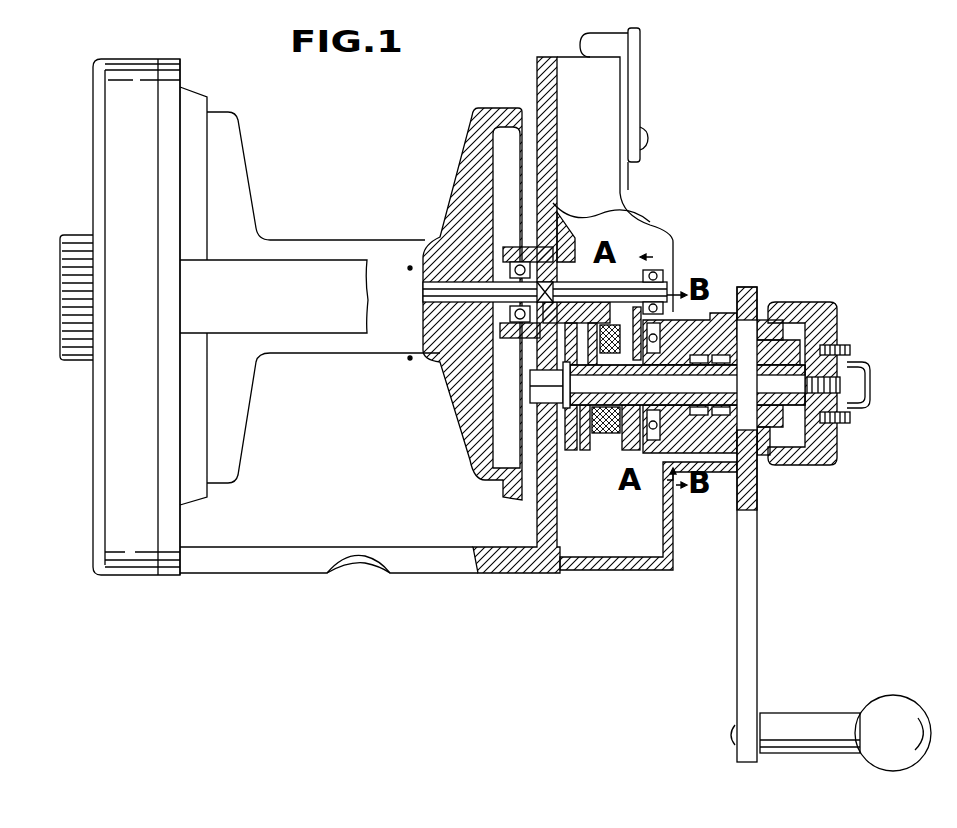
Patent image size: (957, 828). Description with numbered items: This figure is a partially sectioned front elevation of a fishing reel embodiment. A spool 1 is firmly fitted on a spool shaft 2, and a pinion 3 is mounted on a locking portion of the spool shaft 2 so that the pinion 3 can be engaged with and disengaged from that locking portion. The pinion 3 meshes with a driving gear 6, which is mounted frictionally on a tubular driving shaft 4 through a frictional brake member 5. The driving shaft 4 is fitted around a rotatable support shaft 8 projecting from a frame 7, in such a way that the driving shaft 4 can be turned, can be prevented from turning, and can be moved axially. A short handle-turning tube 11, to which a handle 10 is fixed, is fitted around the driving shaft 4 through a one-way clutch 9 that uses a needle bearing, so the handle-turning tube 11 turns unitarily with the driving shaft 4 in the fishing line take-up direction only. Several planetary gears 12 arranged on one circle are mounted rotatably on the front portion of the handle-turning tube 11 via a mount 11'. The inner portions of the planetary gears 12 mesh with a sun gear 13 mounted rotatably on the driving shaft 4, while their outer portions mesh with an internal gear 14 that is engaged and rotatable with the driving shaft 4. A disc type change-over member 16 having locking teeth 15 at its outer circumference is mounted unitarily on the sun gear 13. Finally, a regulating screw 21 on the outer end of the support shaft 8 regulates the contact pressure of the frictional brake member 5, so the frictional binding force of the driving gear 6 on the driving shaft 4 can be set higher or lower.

The spool 1 is at (238, 193).
The spool shaft 2 is at (440, 248).
The pinion 3 is at (628, 195).
The tubular driving shaft 4 is at (728, 300).
The frictional brake member 5 is at (588, 450).
The driving gear 6 is at (575, 463).
The frame 7 is at (547, 538).
The rotatable support shaft 8 is at (530, 383).
The one-way clutch 9 is at (765, 453).
The handle 10 is at (754, 664).
The handle-turning tube 11 is at (716, 350).
The mount 11' is at (652, 493).
The planetary gears 12 is at (722, 300).
The sun gear 13 is at (610, 462).
The internal gear 14 is at (755, 497).
The locking teeth 15 is at (618, 460).
The disc type change-over member 16 is at (617, 468).
The regulating screw 21 is at (818, 300).